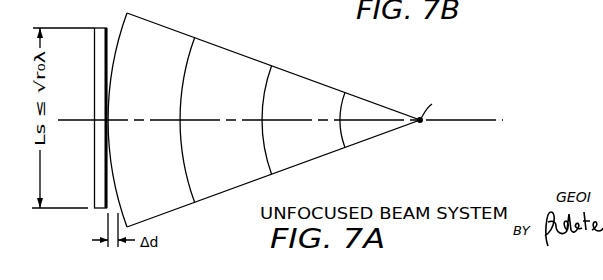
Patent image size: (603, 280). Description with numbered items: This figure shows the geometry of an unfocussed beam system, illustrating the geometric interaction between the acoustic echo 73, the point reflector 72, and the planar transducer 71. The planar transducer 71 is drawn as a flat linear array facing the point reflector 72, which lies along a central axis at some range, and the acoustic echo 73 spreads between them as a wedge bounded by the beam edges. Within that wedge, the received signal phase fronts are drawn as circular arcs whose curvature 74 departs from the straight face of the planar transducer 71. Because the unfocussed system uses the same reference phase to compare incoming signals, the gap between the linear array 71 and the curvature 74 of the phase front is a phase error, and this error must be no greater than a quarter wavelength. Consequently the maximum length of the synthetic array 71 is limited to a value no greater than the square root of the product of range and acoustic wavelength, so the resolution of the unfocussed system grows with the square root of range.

The planar transducer 71 is at (94, 45).
The point reflector 72 is at (420, 120).
The acoustic echo 73 is at (240, 187).
The curvature of the phase front 74 is at (125, 22).